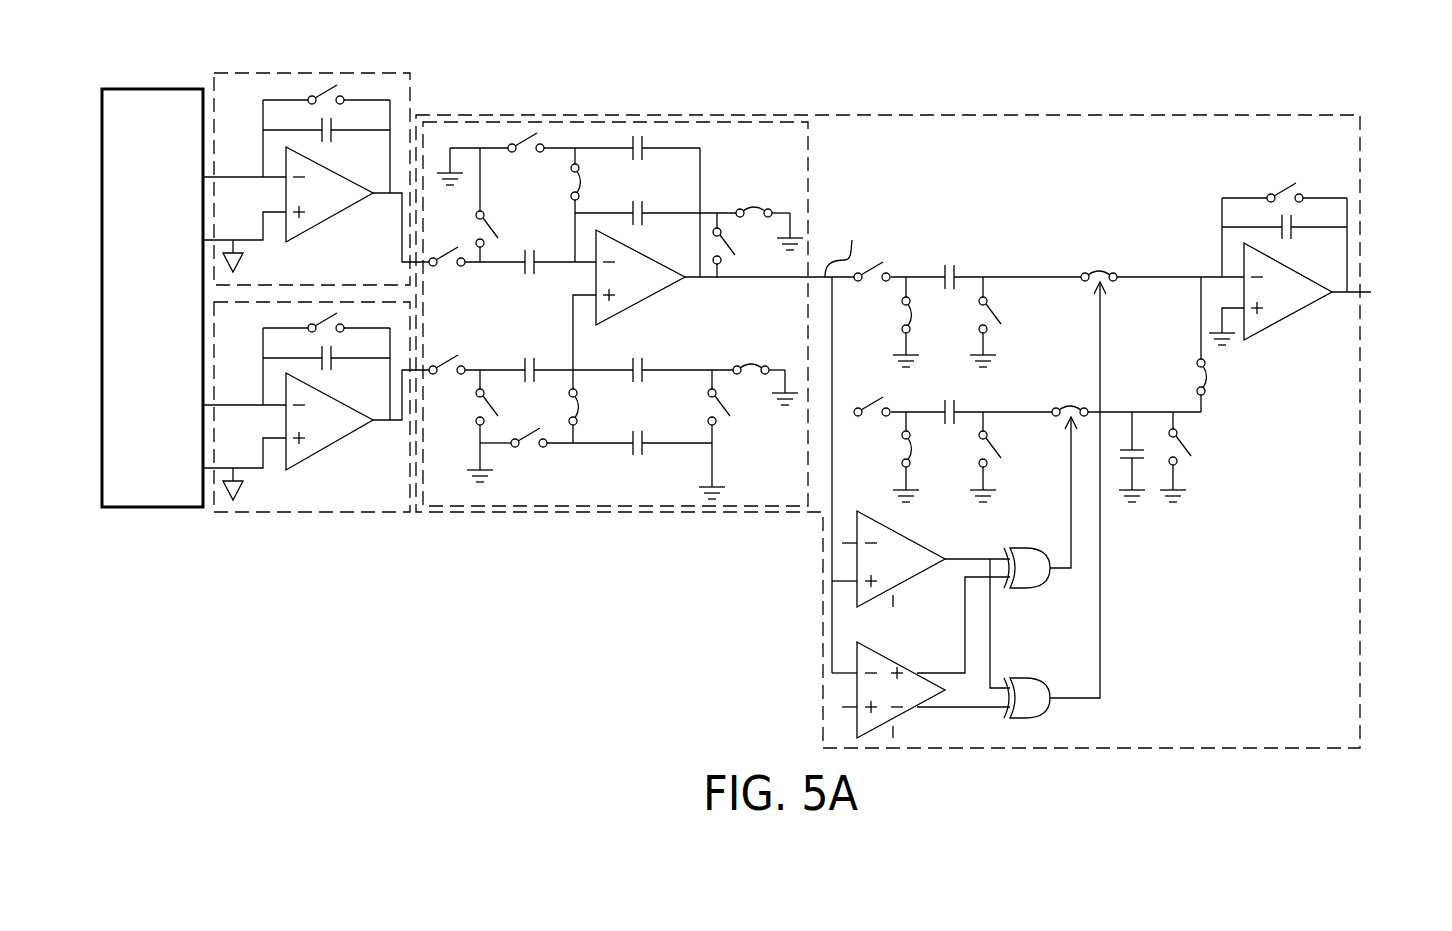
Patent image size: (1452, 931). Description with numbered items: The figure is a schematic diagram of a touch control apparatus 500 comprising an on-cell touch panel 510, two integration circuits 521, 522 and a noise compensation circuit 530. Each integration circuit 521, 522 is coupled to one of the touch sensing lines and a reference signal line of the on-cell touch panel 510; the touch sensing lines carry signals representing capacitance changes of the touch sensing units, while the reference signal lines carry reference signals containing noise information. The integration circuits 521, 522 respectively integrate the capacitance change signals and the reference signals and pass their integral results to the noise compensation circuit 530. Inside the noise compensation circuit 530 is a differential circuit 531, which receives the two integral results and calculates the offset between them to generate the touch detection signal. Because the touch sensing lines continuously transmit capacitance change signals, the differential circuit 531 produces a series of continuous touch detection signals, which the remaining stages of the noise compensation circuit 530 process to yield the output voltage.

The touch control apparatus 500 is at (1406, 804).
The on-cell touch panel 510 is at (163, 89).
The integration circuit 521 is at (360, 73).
The integration circuit 522 is at (364, 512).
The noise compensation circuit 530 is at (1027, 115).
The differential circuit 531 is at (765, 122).